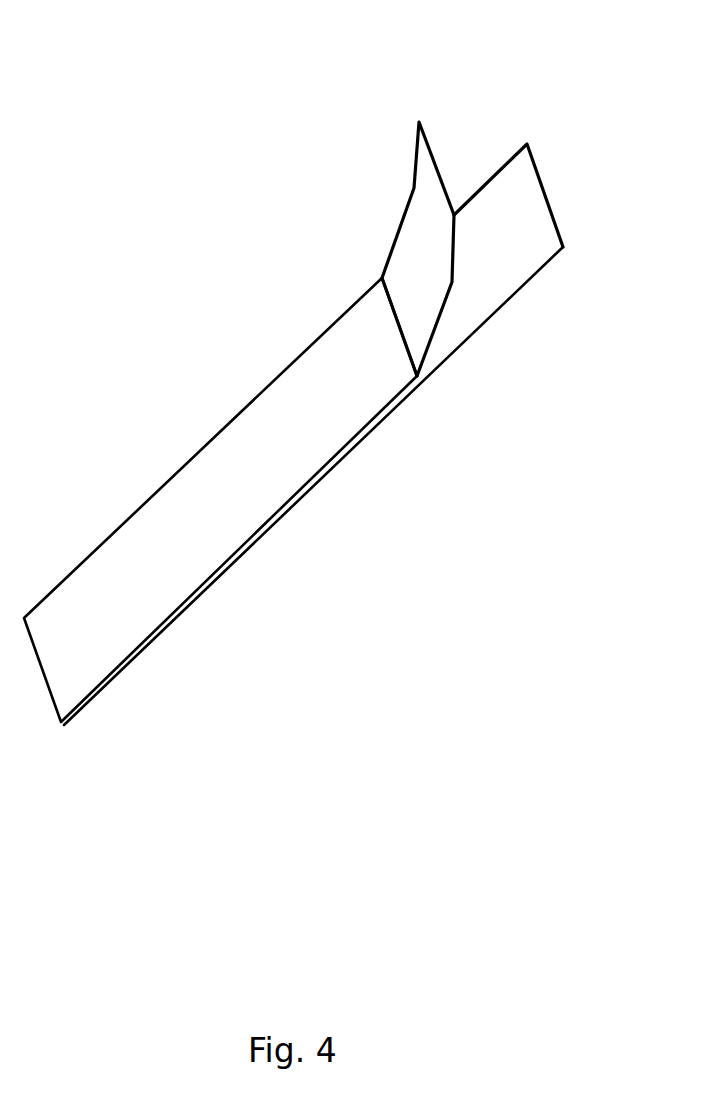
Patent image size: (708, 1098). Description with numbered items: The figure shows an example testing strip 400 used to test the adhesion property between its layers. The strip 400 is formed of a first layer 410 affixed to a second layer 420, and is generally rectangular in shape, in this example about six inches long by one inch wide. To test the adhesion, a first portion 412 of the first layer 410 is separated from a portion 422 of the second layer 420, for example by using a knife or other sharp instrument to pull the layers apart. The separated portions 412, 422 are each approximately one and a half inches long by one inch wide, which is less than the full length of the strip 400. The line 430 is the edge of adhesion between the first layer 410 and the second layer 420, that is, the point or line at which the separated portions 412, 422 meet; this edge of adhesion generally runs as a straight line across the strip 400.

The testing strip 400 is at (188, 101).
The first layer 410 is at (212, 469).
The first portion of the first layer 412 is at (426, 226).
The second layer 420 is at (297, 552).
The portion of the second layer 422 is at (532, 232).
The edge of adhesion 430 is at (398, 327).